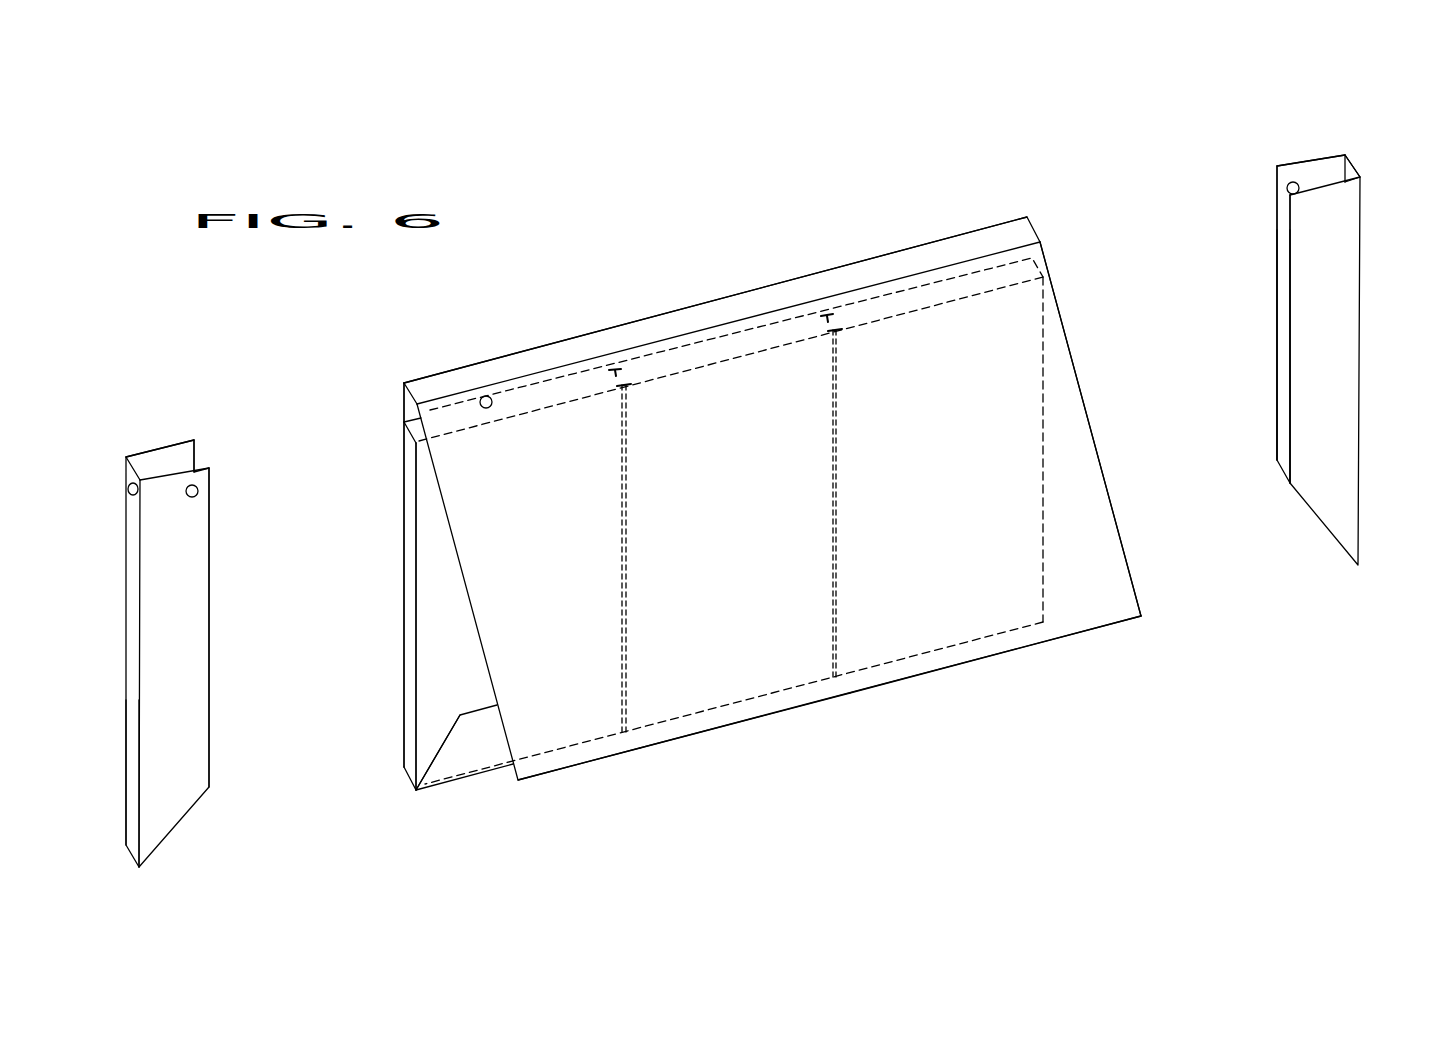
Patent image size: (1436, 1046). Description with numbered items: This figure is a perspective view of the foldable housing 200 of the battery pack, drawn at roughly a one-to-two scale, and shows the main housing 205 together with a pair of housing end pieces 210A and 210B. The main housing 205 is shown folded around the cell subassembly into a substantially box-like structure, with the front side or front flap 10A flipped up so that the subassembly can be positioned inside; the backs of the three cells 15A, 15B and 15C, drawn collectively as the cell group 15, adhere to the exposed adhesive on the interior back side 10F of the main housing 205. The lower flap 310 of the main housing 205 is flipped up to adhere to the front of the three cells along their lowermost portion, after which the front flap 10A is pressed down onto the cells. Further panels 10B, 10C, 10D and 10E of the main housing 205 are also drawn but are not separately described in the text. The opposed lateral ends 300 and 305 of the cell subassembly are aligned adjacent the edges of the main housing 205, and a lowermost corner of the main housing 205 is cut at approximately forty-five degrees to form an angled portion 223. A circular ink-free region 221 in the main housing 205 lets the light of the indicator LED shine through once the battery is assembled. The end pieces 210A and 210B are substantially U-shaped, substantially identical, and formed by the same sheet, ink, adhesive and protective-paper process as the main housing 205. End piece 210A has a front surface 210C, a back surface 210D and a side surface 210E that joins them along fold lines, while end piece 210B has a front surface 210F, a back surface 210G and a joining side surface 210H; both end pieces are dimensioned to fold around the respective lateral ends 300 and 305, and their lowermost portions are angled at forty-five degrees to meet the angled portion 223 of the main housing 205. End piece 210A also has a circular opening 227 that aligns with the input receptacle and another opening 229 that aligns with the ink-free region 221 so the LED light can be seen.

The foldable housing 200 is at (676, 229).
The front flap 10A is at (780, 429).
The top panel 10B is at (722, 310).
The side panel 10C is at (1348, 213).
The side panel 10D is at (166, 615).
The bottom panel 10E is at (412, 800).
The interior back side 10F is at (403, 485).
The front cover panel 15 is at (739, 574).
The cell 15A is at (613, 778).
The cell 15B is at (753, 719).
The cell 15C is at (995, 656).
The main housing 205 is at (787, 398).
The circular ink-free region 221 is at (530, 344).
The angled portion 223 is at (384, 720).
The circular opening 227 is at (95, 510).
The opening 229 is at (231, 508).
The lateral end 300 is at (360, 586).
The lateral end 305 is at (815, 530).
The lower flap 310 is at (446, 775).
The housing end piece 210A is at (176, 410).
The housing end piece 210B is at (1326, 126).
The front surface 210C is at (245, 627).
The back surface 210D is at (224, 440).
The side surface 210E is at (91, 783).
The front surface 210F is at (1253, 356).
The back surface 210G is at (1240, 324).
The side surface 210H is at (1388, 153).